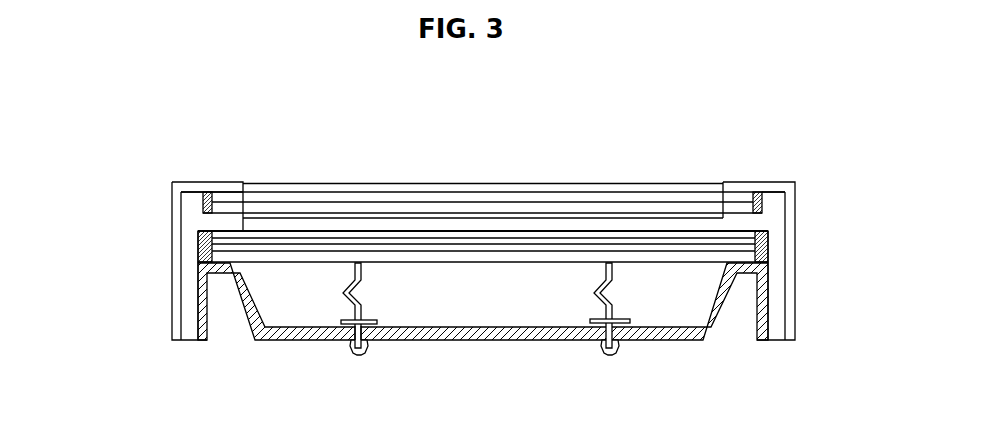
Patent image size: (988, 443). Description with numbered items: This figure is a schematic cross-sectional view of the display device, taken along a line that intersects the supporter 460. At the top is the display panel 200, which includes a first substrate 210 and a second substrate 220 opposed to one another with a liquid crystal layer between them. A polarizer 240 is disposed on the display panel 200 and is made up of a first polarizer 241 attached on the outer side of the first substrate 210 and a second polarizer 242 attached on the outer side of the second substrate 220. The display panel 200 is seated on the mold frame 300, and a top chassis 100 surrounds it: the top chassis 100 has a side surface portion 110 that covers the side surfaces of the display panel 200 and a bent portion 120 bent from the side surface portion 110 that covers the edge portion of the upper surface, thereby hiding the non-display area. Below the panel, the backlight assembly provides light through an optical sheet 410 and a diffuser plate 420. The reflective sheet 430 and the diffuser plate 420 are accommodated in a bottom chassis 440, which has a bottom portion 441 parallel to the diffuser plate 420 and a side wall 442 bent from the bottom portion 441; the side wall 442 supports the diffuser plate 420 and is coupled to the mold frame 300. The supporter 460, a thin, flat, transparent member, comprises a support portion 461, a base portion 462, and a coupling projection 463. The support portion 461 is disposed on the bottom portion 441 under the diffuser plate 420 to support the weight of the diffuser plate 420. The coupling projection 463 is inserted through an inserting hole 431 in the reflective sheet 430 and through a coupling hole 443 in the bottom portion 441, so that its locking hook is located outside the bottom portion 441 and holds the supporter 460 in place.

The top chassis 100 is at (103, 172).
The side surface portion 110 is at (176, 258).
The bent portion 120 is at (183, 188).
The display panel 200 is at (368, 137).
The first substrate 210 is at (363, 205).
The second substrate 220 is at (312, 198).
The polarizer 240 is at (502, 137).
The first polarizer 241 is at (503, 215).
The second polarizer 242 is at (452, 192).
The mold frame 300 is at (777, 220).
The optical sheet 410 is at (623, 252).
The diffuser plate 420 is at (747, 258).
The reflective sheet 430 is at (472, 341).
The inserting hole 431 is at (377, 348).
The bottom chassis 440 is at (342, 392).
The bottom portion 441 is at (292, 341).
The side wall 442 is at (252, 332).
The coupling hole 443 is at (340, 342).
The supporter 460 is at (648, 407).
The support portion 461 is at (598, 283).
The base portion 462 is at (622, 340).
The coupling projection 463 is at (605, 352).